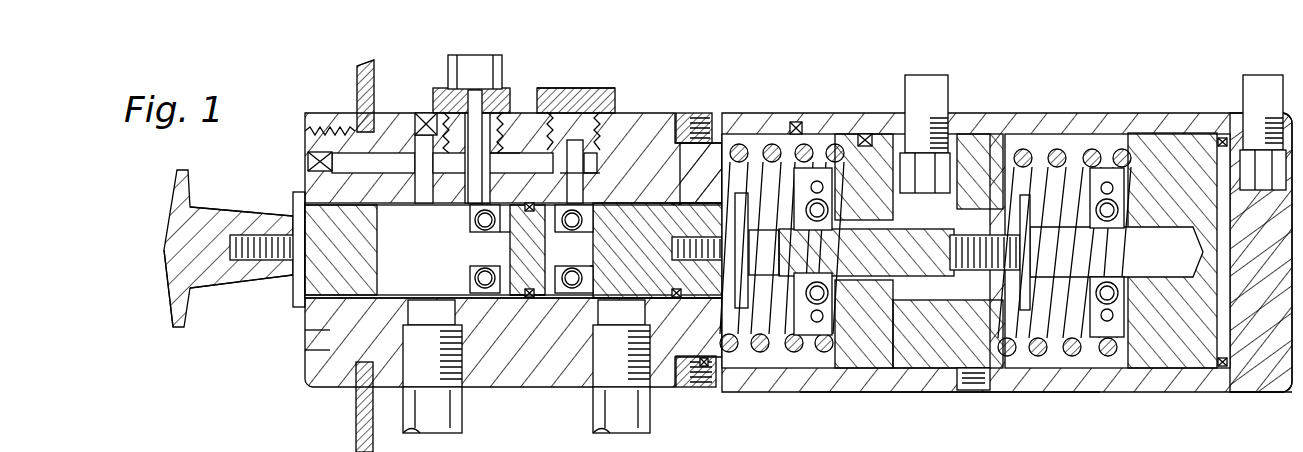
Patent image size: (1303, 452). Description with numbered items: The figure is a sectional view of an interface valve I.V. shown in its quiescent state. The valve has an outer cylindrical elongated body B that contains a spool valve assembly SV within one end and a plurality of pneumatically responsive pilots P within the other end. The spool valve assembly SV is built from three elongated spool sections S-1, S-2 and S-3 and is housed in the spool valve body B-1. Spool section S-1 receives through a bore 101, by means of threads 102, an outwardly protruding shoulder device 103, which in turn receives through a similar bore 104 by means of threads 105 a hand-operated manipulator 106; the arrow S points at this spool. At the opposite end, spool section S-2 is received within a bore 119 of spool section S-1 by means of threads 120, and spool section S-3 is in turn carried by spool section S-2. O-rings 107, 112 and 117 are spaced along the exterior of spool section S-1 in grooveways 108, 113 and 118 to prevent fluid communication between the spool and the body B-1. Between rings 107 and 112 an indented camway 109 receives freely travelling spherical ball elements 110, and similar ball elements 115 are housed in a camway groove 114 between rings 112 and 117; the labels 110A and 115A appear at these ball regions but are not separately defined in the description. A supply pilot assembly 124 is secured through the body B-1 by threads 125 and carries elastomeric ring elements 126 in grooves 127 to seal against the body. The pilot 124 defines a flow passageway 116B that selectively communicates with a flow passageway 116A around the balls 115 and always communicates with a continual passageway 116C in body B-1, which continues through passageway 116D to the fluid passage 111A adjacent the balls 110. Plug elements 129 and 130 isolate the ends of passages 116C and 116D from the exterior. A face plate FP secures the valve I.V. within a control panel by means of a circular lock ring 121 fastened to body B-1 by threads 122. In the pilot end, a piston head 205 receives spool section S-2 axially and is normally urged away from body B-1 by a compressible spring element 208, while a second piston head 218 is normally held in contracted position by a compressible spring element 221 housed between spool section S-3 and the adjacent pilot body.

The bore 101 is at (310, 352).
The threads 102 is at (312, 332).
The shoulder device 103 is at (298, 305).
The bore 104 is at (236, 236).
The threads 105 is at (232, 240).
The manipulator 106 is at (173, 203).
The O-ring 107 is at (390, 299).
The grooveway 108 is at (307, 357).
The indented camway 109 is at (500, 258).
The spherical ball elements 110 is at (455, 308).
The upper O-ring seal 110A is at (465, 220).
The fluid passage 111A is at (455, 284).
The O-ring 112 is at (528, 298).
The grooveway 113 is at (520, 298).
The groove 114 is at (535, 298).
The spherical ball elements 115 is at (577, 255).
The O-ring seal 115A is at (595, 222).
The flow passageway 116A is at (593, 305).
The flow passageway 116B is at (582, 140).
The continual passageway 116C is at (523, 152).
The passageway 116D is at (420, 152).
The O-ring 117 is at (672, 204).
The grooveway 118 is at (693, 205).
The bore 119 is at (582, 290).
The threads 120 is at (715, 300).
The circular lock ring 121 is at (357, 90).
The threads 122 is at (318, 152).
The supply pilot assembly 124 is at (575, 85).
The threads 125 is at (660, 113).
The elastomeric ring elements 126 is at (607, 133).
The groove 127 is at (573, 140).
The plug element 129 is at (305, 152).
The plug element 130 is at (435, 108).
The piston head 205 is at (847, 143).
The compressable spring element 208 is at (770, 145).
The piston head 218 is at (1150, 143).
The compressable spring element 221 is at (1030, 170).
The face plate FP is at (357, 68).
The spool direction S is at (244, 303).
The spool valve assembly SV is at (192, 346).
The spool section S-1 is at (433, 260).
The spool section S-2 is at (883, 263).
The spool section S-3 is at (1110, 263).
The spool valve body B-1 is at (695, 112).
The outer cylindrical elongated body B is at (1253, 350).
The pneumatically responsive pilots P is at (829, 405).
The interface valve I.V. is at (1267, 403).